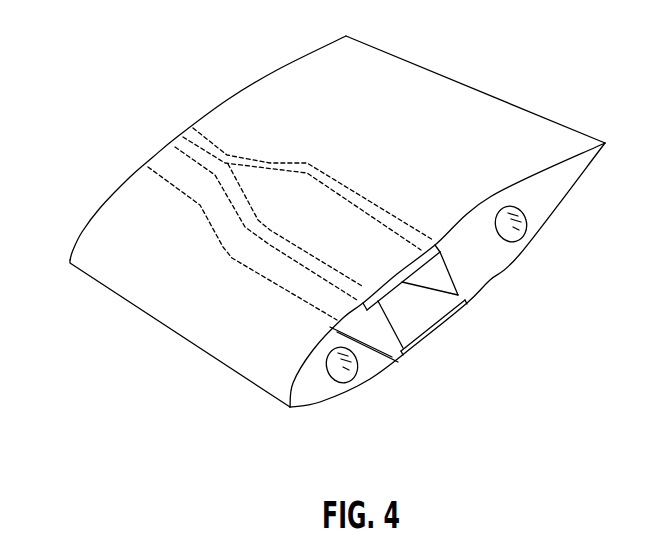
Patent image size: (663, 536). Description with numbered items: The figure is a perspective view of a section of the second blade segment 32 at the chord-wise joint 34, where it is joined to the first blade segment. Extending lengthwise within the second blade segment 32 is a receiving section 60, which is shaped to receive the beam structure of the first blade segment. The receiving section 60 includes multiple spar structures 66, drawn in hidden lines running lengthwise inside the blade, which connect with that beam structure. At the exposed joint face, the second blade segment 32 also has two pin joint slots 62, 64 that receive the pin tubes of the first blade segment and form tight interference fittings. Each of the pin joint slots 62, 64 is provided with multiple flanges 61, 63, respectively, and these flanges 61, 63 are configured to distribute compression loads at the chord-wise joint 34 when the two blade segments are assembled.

The second blade segment 32 is at (432, 79).
The chord-wise joint 34 is at (299, 423).
The receiving section 60 is at (427, 317).
The flanges 61 is at (330, 353).
The pin joint slot 62 is at (350, 363).
The flanges 63 is at (503, 209).
The pin joint slot 64 is at (511, 228).
The spar structures 66 is at (342, 190).